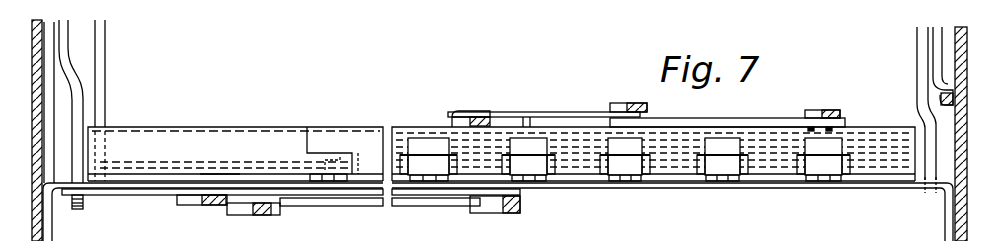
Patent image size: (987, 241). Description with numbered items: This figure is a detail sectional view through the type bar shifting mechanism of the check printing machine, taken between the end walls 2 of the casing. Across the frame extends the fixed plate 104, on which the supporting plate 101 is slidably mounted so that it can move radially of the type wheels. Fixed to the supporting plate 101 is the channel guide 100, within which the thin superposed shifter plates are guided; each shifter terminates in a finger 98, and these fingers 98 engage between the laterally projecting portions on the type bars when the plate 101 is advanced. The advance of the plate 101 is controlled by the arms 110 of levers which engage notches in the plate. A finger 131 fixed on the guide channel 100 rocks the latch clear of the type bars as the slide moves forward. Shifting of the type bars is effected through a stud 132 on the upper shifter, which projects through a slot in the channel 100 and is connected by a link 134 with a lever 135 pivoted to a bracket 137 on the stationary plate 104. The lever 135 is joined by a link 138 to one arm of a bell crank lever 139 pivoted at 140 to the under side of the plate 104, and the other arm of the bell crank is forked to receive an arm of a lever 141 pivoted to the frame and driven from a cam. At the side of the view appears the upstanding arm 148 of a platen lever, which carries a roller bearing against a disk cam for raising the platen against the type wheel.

The end walls 2 is at (33, 172).
The upstanding arm 148 is at (50, 82).
The arms 110 is at (106, 96).
The channel guide 100 is at (274, 126).
The fixed plate 104 is at (154, 182).
The supporting plate 101 is at (213, 178).
The bell crank lever 139 is at (150, 191).
The lever 141 is at (78, 210).
The pivot 140 is at (200, 201).
The link 138 is at (342, 204).
The finger 131 is at (453, 171).
The bracket 137 is at (451, 104).
The lever 135 is at (543, 112).
The link 134 is at (703, 120).
The stud 132 is at (823, 103).
The fingers 98 is at (725, 182).